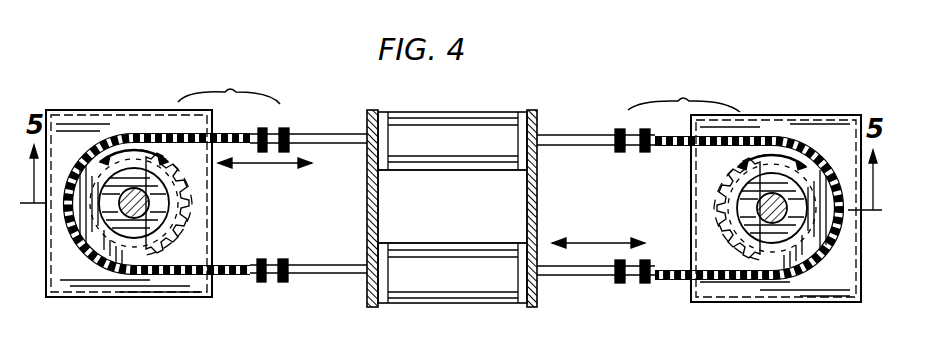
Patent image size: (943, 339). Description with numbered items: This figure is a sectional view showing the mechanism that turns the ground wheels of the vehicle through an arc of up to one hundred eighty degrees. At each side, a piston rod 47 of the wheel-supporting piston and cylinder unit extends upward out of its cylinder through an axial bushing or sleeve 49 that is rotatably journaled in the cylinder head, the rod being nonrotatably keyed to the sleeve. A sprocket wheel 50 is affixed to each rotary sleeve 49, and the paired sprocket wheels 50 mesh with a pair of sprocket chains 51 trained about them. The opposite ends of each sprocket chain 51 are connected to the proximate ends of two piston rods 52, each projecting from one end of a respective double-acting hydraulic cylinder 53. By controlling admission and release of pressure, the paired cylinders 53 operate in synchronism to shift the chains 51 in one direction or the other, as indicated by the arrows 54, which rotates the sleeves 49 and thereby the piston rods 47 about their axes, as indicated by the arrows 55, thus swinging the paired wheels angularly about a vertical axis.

The piston rod 47 is at (144, 210).
The axial bushing or sleeve 49 is at (150, 199).
The sprocket wheel 50 is at (205, 262).
The sprocket chain 51 is at (118, 135).
The piston rod 52 is at (326, 135).
The double-acting hydraulic cylinder 53 is at (490, 142).
The arrows 54 is at (286, 168).
The arrows 55 is at (145, 158).